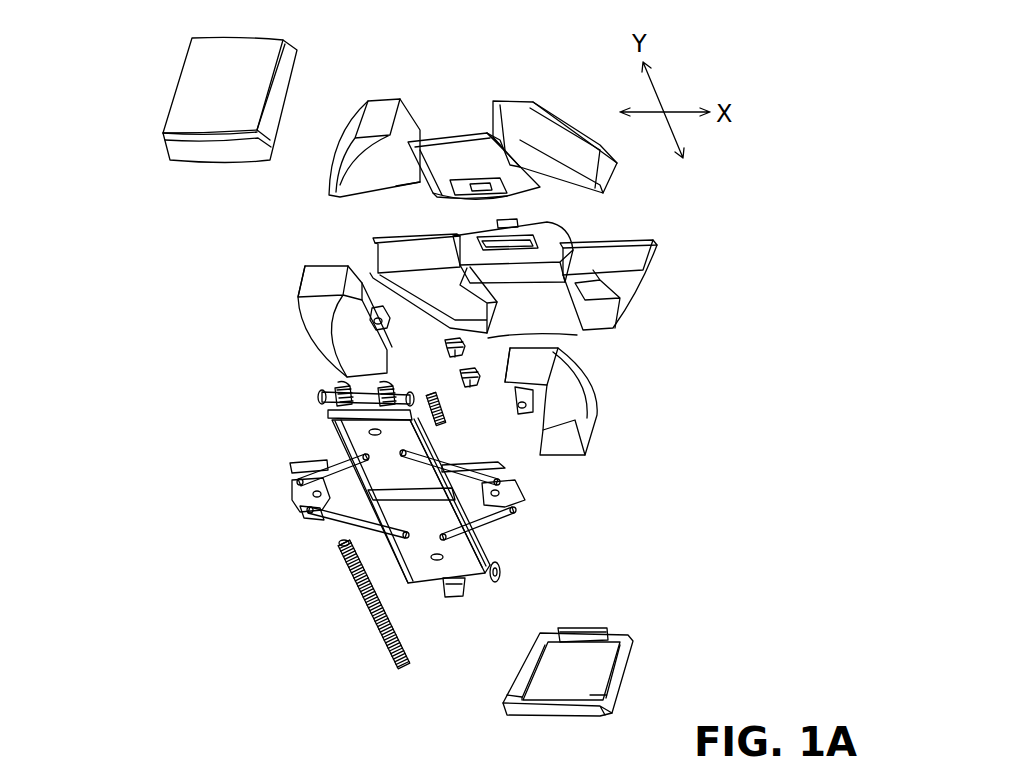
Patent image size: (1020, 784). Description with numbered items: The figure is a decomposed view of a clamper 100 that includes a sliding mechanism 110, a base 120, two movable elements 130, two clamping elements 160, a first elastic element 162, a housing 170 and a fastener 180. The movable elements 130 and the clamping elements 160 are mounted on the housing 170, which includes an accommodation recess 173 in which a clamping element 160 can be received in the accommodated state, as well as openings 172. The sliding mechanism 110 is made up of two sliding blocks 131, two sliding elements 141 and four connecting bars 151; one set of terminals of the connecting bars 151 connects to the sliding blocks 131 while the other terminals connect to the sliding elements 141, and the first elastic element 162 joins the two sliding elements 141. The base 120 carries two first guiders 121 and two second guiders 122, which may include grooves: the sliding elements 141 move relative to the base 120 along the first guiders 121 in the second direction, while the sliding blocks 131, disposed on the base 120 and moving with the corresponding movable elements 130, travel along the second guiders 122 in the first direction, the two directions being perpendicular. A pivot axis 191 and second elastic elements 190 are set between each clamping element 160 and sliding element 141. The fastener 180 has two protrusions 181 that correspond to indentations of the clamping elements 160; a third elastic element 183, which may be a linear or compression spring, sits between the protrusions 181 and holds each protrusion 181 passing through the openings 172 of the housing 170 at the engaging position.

The clamper 100 is at (99, 28).
The sliding mechanism 110 is at (275, 482).
The base 120 is at (487, 540).
The first guider 121 is at (497, 560).
The second guider 122 is at (313, 510).
The movable element 130 is at (305, 343).
The sliding block 131 is at (307, 500).
The sliding element 141 is at (357, 432).
The connecting bar 151 is at (323, 470).
The clamping element 160 is at (232, 52).
The first elastic element 162 is at (370, 613).
The housing 170 is at (438, 157).
The opening 172 is at (480, 183).
The accommodation recess 173 is at (484, 112).
The fastener 180 is at (652, 340).
The protrusion 181 is at (462, 350).
The third elastic element 183 is at (443, 423).
The second elastic element 190 is at (345, 392).
The pivot axis 191 is at (330, 398).